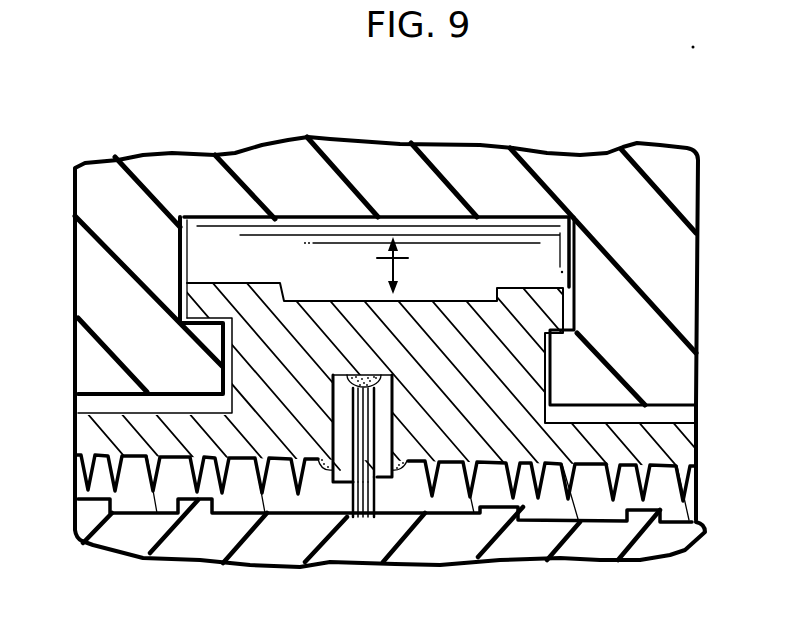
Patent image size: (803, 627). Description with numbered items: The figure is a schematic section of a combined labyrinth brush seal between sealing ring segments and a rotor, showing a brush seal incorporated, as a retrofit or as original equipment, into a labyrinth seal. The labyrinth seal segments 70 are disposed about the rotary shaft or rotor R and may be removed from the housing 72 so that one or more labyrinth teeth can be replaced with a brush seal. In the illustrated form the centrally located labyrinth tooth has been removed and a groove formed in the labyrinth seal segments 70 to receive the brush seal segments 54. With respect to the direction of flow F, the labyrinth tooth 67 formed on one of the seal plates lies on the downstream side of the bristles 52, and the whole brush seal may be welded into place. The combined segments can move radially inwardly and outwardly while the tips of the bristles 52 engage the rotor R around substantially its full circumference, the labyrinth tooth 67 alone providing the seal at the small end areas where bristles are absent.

The housing 72 is at (113, 173).
The labyrinth seal segments 70 is at (488, 353).
The bristles 52 is at (383, 402).
The brush seal segments 54 is at (348, 428).
The labyrinth tooth 67 is at (378, 475).
The rotor R is at (180, 545).
The direction of flow F is at (58, 478).